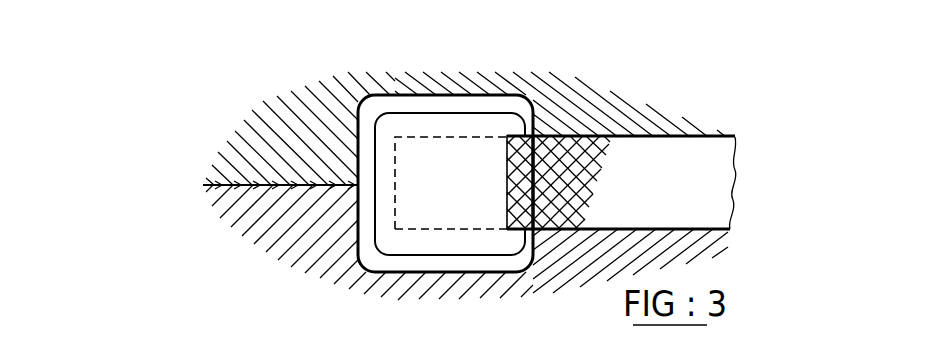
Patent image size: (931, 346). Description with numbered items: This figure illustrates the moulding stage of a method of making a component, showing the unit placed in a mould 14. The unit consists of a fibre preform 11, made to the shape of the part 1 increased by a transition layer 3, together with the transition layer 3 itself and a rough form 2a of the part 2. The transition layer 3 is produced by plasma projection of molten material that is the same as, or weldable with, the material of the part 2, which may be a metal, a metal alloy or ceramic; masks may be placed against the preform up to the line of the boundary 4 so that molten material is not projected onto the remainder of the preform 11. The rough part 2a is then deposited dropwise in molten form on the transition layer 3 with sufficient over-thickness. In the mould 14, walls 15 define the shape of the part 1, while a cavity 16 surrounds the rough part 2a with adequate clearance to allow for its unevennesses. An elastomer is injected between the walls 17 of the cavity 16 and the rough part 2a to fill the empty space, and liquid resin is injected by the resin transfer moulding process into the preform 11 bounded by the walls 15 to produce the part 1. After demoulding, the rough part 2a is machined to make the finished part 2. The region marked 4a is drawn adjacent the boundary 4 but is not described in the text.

The part 1 is at (728, 163).
The part 2 is at (372, 220).
The rough form of the part 2a is at (412, 262).
The transition layer 3 is at (517, 225).
The boundary 4 is at (579, 135).
The insert edge 4a is at (535, 135).
The fibre preform 11 is at (590, 153).
The mould 14 is at (274, 150).
The walls 15 is at (688, 139).
The cavity 16 is at (413, 88).
The walls of the cavity 17 is at (472, 93).